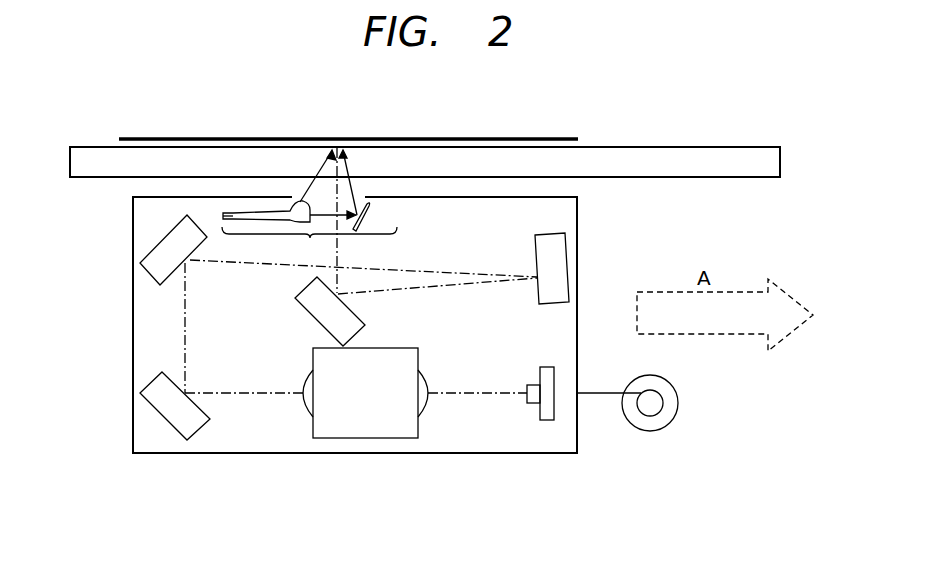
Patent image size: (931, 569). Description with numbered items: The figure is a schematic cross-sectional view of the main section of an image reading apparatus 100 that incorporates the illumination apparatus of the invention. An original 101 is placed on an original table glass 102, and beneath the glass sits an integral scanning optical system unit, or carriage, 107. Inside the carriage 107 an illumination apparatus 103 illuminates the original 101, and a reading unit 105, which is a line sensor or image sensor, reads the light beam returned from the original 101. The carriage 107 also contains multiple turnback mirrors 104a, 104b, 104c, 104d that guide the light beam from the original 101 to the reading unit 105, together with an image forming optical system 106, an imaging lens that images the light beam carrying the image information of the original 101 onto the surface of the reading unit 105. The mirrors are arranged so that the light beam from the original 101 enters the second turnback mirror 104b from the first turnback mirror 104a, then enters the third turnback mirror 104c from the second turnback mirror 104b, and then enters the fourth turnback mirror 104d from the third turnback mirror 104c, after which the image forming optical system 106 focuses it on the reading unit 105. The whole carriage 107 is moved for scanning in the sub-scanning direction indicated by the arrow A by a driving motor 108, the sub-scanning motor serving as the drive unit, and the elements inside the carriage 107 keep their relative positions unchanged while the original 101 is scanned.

The image reading apparatus 100 is at (93, 146).
The original 101 is at (403, 137).
The original table glass 102 is at (658, 153).
The illumination apparatus 103 is at (310, 238).
The first turnback mirror 104a is at (307, 313).
The second turnback mirror 104b is at (562, 243).
The third turnback mirror 104c is at (155, 252).
The fourth turnback mirror 104d is at (198, 425).
The reading unit 105 is at (548, 420).
The image forming optical system 106 is at (390, 438).
The integral scanning optical system unit 107 is at (133, 403).
The driving motor 108 is at (672, 417).